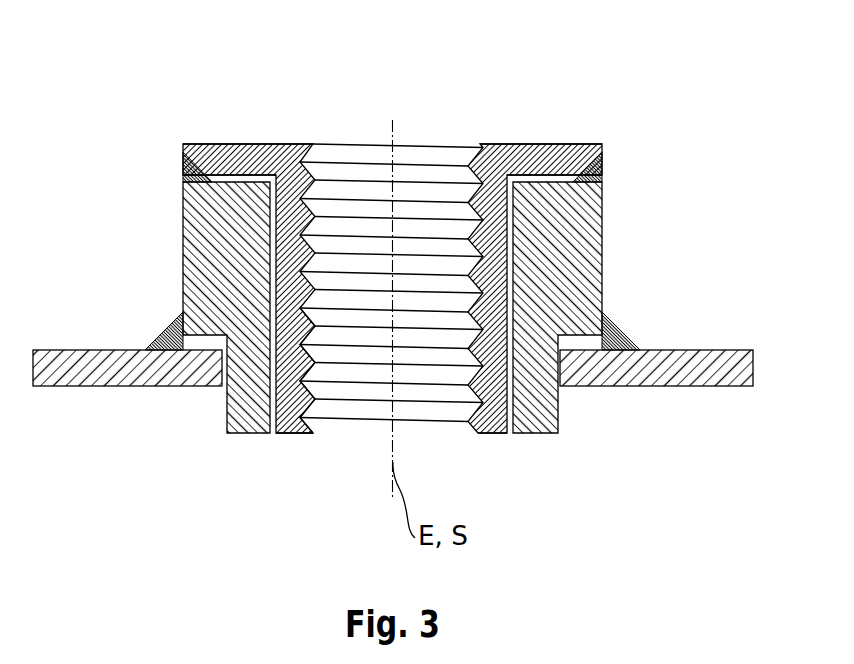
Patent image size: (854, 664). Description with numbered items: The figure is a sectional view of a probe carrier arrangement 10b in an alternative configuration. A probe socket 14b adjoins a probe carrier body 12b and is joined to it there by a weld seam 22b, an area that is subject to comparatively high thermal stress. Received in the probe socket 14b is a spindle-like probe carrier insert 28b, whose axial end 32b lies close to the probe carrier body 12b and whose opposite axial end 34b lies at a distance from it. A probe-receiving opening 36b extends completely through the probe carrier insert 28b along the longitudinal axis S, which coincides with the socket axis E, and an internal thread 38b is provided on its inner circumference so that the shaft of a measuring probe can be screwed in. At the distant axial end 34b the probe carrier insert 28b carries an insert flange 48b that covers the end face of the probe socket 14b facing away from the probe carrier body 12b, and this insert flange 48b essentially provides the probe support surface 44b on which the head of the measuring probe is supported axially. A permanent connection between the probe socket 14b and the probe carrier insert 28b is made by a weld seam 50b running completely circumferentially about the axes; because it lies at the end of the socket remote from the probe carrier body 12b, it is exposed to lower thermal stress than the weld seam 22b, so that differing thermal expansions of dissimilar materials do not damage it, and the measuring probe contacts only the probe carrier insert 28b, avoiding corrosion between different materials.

The probe carrier arrangement 10b is at (672, 108).
The probe carrier body 12b is at (722, 387).
The probe socket 14b is at (183, 243).
The weld seam 22b is at (158, 336).
The probe carrier insert 28b is at (290, 435).
The axial end 32b is at (489, 434).
The axial end 34b is at (441, 143).
The probe-receiving opening 36b is at (340, 173).
The internal thread 38b is at (305, 410).
The probe support surface 44b is at (224, 144).
The insert flange 48b is at (580, 143).
The weld seam 50b is at (602, 171).